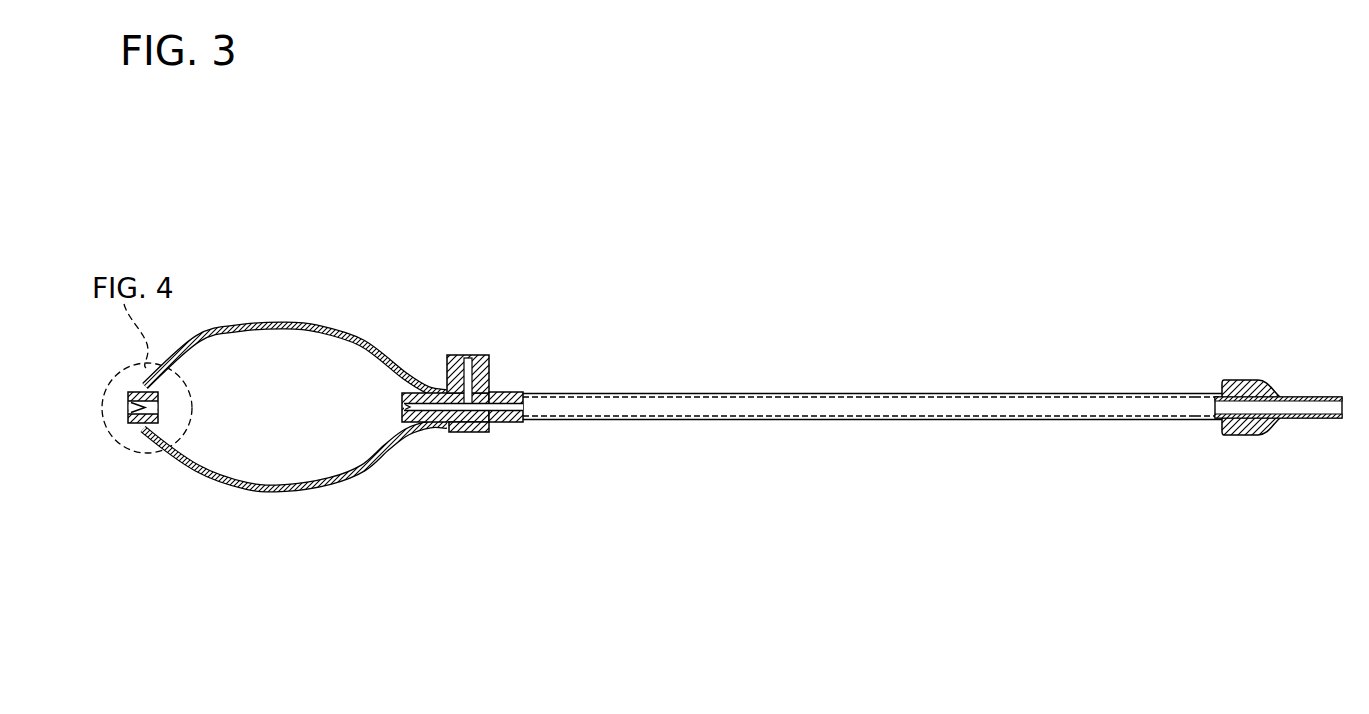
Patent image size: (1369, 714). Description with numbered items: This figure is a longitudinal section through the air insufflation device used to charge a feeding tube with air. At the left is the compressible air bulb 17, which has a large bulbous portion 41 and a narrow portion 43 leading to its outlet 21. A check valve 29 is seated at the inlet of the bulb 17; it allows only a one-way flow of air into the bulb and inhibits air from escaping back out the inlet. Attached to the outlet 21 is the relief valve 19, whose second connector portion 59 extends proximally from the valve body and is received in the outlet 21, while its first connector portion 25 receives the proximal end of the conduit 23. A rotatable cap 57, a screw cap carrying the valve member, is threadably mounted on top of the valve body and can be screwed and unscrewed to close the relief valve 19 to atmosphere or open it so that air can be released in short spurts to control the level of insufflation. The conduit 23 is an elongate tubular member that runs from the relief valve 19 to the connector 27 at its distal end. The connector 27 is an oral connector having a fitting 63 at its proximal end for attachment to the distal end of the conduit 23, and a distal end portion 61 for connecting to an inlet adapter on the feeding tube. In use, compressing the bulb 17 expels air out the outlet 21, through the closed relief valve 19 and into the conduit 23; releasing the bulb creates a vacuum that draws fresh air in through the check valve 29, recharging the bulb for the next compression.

The compressible air bulb 17 is at (295, 409).
The relief valve 19 is at (481, 420).
The outlet 21 is at (430, 393).
The conduit 23 is at (873, 370).
The first connector portion 25 is at (508, 397).
The connector 27 is at (1282, 388).
The check valve 29 is at (131, 421).
The bulbous portion 41 is at (245, 490).
The narrow portion 43 is at (438, 434).
The rotatable cap 57 is at (479, 353).
The second connector portion 59 is at (402, 415).
The distal end portion 61 is at (1303, 420).
The fitting 63 is at (1212, 404).